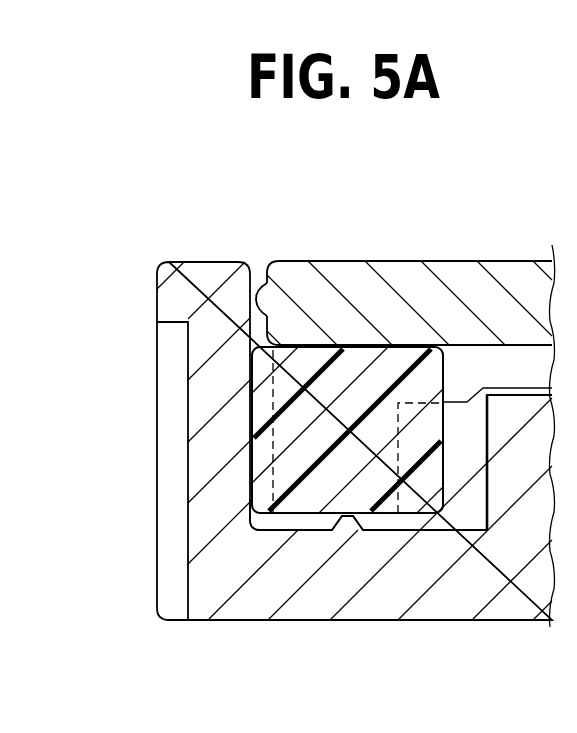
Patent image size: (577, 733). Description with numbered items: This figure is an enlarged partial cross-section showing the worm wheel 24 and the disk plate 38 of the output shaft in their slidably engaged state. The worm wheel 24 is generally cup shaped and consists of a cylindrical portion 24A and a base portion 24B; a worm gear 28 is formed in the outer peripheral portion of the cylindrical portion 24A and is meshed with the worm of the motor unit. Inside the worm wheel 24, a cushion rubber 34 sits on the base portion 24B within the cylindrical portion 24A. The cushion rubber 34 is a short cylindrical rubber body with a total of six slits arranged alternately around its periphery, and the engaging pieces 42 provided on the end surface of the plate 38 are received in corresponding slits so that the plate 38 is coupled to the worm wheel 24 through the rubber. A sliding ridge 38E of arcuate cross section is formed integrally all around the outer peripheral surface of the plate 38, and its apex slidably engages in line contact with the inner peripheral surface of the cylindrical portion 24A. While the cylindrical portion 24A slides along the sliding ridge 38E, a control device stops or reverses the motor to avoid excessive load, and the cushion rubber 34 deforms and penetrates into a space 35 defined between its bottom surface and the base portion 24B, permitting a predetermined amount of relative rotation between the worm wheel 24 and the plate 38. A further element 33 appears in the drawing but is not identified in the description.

The worm wheel 24 is at (198, 624).
The cylindrical portion 24A is at (210, 282).
The base portion 24B is at (447, 600).
The worm gear 28 is at (172, 462).
The projection 33 is at (350, 513).
The cushion rubber 34 is at (297, 505).
The space 35 is at (315, 520).
The plate 38 is at (398, 258).
The sliding ridge 38E is at (257, 298).
The engaging pieces 42 is at (275, 396).